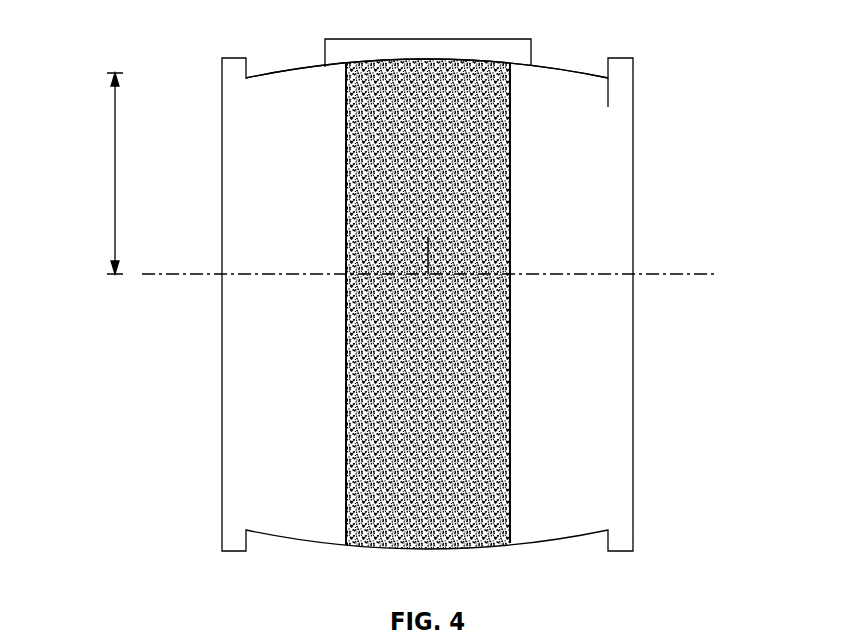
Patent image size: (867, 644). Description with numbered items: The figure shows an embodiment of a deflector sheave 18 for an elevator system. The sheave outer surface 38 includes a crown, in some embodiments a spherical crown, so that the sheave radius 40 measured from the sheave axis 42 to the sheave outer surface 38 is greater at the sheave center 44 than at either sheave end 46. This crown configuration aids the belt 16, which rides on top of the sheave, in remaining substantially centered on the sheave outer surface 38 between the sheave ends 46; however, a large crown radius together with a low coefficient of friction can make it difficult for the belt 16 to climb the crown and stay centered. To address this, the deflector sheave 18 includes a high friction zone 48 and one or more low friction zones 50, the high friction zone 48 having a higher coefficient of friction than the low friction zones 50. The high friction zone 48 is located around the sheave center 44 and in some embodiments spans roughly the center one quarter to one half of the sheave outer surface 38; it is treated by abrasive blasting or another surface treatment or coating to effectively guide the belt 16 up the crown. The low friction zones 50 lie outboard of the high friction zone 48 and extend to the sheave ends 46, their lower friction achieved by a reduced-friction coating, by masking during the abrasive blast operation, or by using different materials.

The belt 16 is at (353, 38).
The deflector sheave 18 is at (234, 108).
The sheave outer surface 38 is at (271, 70).
The sheave radius 40 is at (115, 175).
The sheave axis 42 is at (185, 277).
The sheave center 44 is at (428, 253).
The sheave end 46 is at (610, 93).
The high friction zone 48 is at (495, 510).
The low friction zone 50 is at (292, 424).